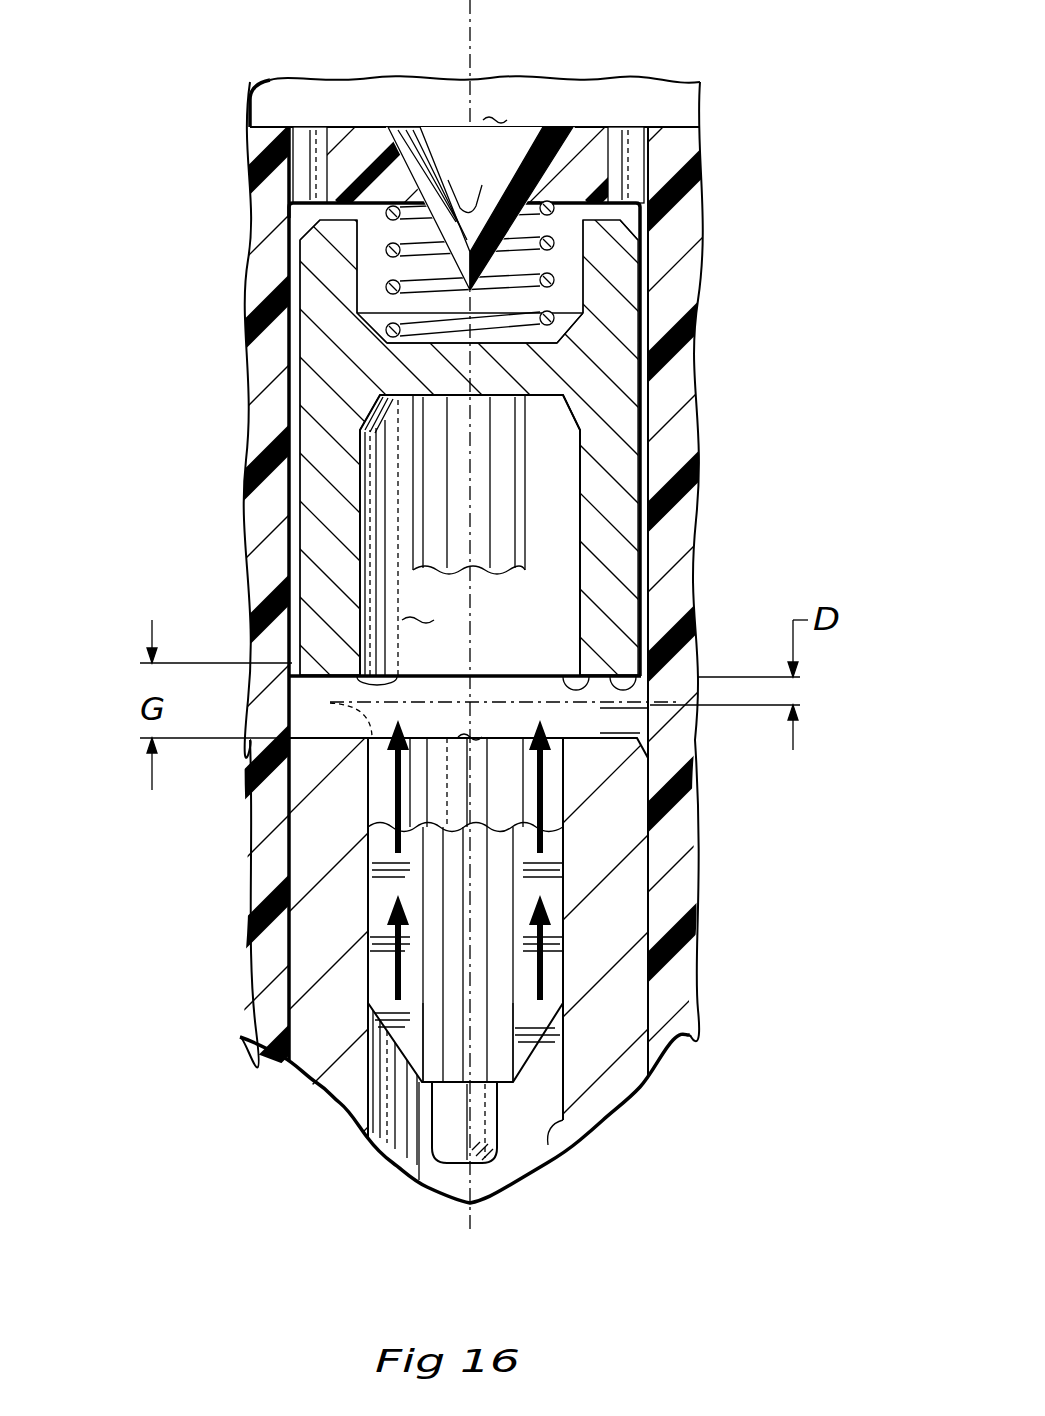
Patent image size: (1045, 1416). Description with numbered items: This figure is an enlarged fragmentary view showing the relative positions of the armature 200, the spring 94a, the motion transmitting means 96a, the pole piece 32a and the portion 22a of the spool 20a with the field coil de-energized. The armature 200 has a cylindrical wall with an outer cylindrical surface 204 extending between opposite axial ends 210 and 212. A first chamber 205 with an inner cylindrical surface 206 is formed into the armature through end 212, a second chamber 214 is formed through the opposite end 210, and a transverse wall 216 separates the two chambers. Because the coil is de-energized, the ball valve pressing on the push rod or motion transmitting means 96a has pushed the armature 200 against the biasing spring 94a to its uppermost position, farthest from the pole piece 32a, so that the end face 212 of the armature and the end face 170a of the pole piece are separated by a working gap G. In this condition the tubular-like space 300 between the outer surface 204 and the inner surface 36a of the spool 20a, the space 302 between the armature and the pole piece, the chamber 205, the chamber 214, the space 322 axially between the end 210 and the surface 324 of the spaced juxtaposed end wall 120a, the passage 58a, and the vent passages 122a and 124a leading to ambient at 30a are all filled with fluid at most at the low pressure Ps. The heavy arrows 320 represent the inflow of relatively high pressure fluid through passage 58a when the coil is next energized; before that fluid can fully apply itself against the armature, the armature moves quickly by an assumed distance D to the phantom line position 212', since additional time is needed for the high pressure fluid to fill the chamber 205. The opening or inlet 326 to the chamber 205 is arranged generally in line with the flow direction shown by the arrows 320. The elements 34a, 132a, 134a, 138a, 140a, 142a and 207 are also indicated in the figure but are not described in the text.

The spool 20a is at (268, 967).
The portion of spool 22a is at (272, 500).
The ambient area 30a is at (574, 88).
The pole piece 32a is at (349, 1093).
The lower body portion 34a is at (648, 858).
The inner surface of spool 36a is at (296, 350).
The passage 58a is at (563, 1118).
The spring 94a is at (560, 277).
The motion transmitting means 96a is at (473, 827).
The end wall 120a is at (432, 172).
The vent passage 122a is at (313, 128).
The vent passage 124a is at (628, 135).
The lower stem portion 132a is at (565, 995).
The stem shoulder 134a is at (490, 950).
The housing partition 138a is at (482, 382).
The nozzle axis 140a is at (470, 1225).
The nozzle tip 142a is at (497, 1137).
The end face of pole piece 170a is at (590, 708).
The armature 200 is at (290, 389).
The outer cylindrical surface 204 is at (542, 400).
The first recess or chamber 205 is at (424, 601).
The inner cylindrical surface 206 is at (365, 588).
The pintle side wall 207 is at (582, 490).
The armature axial end 210 is at (287, 207).
The armature axial end face 212 is at (578, 627).
The phantom line position of armature end 212' is at (406, 768).
The second recess or chamber 214 is at (357, 258).
The transverse wall 216 is at (537, 358).
The tubular-like space 300 is at (298, 418).
The space between armature and pole piece 302 is at (505, 720).
The arrows 320 is at (540, 765).
The space between armature end and end wall 322 is at (570, 205).
The surface of end wall 324 is at (642, 212).
The inlet opening 326 is at (378, 596).